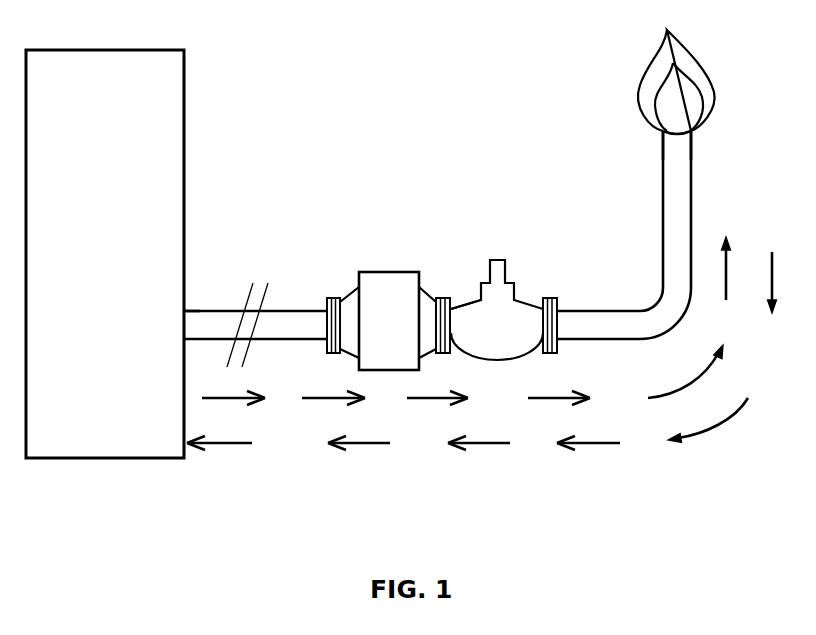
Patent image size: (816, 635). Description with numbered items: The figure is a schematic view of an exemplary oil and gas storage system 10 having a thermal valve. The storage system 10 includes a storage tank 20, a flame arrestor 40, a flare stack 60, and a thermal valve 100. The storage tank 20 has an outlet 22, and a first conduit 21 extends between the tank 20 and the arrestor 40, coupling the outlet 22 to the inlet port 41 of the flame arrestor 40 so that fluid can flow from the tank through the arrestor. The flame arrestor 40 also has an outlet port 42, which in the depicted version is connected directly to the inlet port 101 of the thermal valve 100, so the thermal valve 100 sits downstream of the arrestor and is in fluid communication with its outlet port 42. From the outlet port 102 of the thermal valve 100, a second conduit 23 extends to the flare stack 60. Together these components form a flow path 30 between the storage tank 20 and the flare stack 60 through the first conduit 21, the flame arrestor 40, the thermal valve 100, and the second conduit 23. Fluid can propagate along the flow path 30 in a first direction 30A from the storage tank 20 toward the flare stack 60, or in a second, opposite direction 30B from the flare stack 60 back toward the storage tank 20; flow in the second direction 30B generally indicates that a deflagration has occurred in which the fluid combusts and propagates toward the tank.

The storage system 10 is at (202, 517).
The storage tank 20 is at (185, 86).
The first conduit 21 is at (287, 341).
The outlet 22 is at (196, 302).
The second conduit 23 is at (605, 341).
The flow path 30 is at (771, 280).
The first direction 30A is at (314, 399).
The second direction 30B is at (373, 446).
The flame arrestor 40 is at (360, 271).
The inlet port 41 is at (334, 293).
The outlet port 42 is at (436, 293).
The flare stack 60 is at (663, 153).
The thermal valve 100 is at (499, 259).
The inlet port 101 is at (453, 287).
The outlet port 102 is at (542, 291).